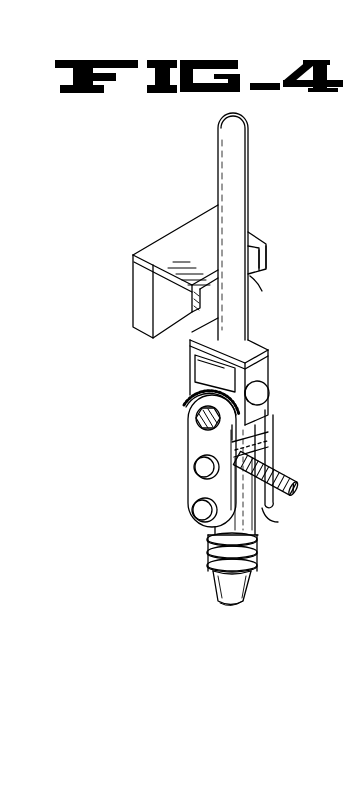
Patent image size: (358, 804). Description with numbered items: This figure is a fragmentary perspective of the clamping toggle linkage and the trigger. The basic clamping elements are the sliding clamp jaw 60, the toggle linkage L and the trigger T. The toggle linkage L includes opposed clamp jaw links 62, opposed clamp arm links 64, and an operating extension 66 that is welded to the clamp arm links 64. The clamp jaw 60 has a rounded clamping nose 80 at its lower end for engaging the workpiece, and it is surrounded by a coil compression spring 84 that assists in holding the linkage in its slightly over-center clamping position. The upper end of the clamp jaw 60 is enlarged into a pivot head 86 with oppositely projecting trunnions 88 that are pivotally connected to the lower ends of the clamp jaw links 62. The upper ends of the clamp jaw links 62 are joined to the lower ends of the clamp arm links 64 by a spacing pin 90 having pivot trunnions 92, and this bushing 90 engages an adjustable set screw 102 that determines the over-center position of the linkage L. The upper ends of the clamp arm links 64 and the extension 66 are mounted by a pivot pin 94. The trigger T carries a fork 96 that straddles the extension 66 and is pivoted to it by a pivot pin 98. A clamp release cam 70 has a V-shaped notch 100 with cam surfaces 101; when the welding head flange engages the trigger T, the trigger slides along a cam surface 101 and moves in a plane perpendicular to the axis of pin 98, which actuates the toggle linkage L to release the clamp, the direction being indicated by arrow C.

The trigger T is at (218, 137).
The clamp release cam 70 is at (137, 248).
The V-shaped notch 100 is at (267, 253).
The cam surface 101 is at (205, 297).
The operating extension 66 is at (210, 370).
The fork 96 is at (269, 357).
The pivot pin 98 is at (270, 388).
The clamp arm links 64 is at (273, 410).
The toggle linkage L is at (282, 430).
The spacing pin 90 is at (272, 448).
The set screw 102 is at (297, 476).
The clamp jaw links 62 is at (270, 506).
The pivot head 86 is at (269, 521).
The pivot pin 94 is at (197, 413).
The pivot trunnions 92 is at (196, 462).
The direction C is at (152, 480).
The trunnions 88 is at (194, 518).
The coil compression spring 84 is at (208, 550).
The sliding clamp jaw 60 is at (212, 583).
The rounded clamping nose 80 is at (223, 603).